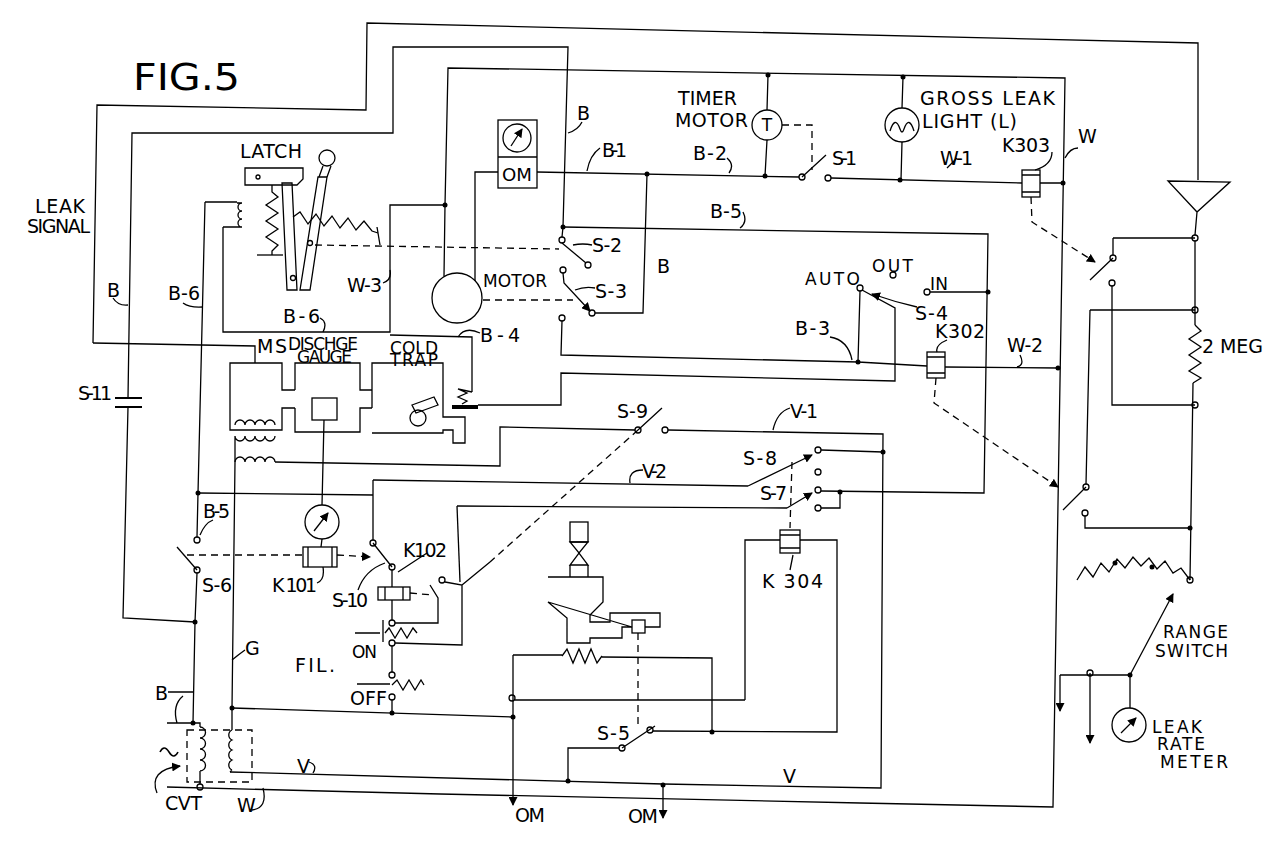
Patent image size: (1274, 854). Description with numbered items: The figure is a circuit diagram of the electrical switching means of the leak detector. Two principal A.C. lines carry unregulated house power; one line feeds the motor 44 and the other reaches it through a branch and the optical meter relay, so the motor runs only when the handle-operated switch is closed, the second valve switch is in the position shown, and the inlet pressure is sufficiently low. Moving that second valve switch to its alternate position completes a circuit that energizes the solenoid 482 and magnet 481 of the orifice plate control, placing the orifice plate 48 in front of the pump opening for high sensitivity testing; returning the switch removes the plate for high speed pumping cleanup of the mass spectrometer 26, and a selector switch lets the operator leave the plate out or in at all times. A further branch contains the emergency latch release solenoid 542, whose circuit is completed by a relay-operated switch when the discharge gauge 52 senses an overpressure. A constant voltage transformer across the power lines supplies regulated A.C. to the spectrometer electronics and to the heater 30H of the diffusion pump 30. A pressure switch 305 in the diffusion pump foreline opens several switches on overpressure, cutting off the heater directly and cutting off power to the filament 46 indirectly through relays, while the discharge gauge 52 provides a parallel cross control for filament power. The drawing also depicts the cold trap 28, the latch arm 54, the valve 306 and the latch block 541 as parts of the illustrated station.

The mass spectrometer 26 is at (268, 394).
The cold trap 28 is at (418, 394).
The diffusion pump 30 is at (586, 586).
The heater of diffusion pump 30H is at (560, 662).
The motor 44 is at (483, 309).
The filament 46 is at (238, 422).
The orifice plate 48 is at (410, 415).
The discharge gauge 52 is at (333, 392).
The latch arm 54 is at (287, 257).
The pressure switch 305 is at (648, 630).
The diffusion pump valve 306 is at (588, 552).
The magnet 481 is at (478, 410).
The solenoid 482 is at (470, 393).
The latch block 541 is at (245, 177).
The emergency latch release solenoid 542 is at (237, 211).